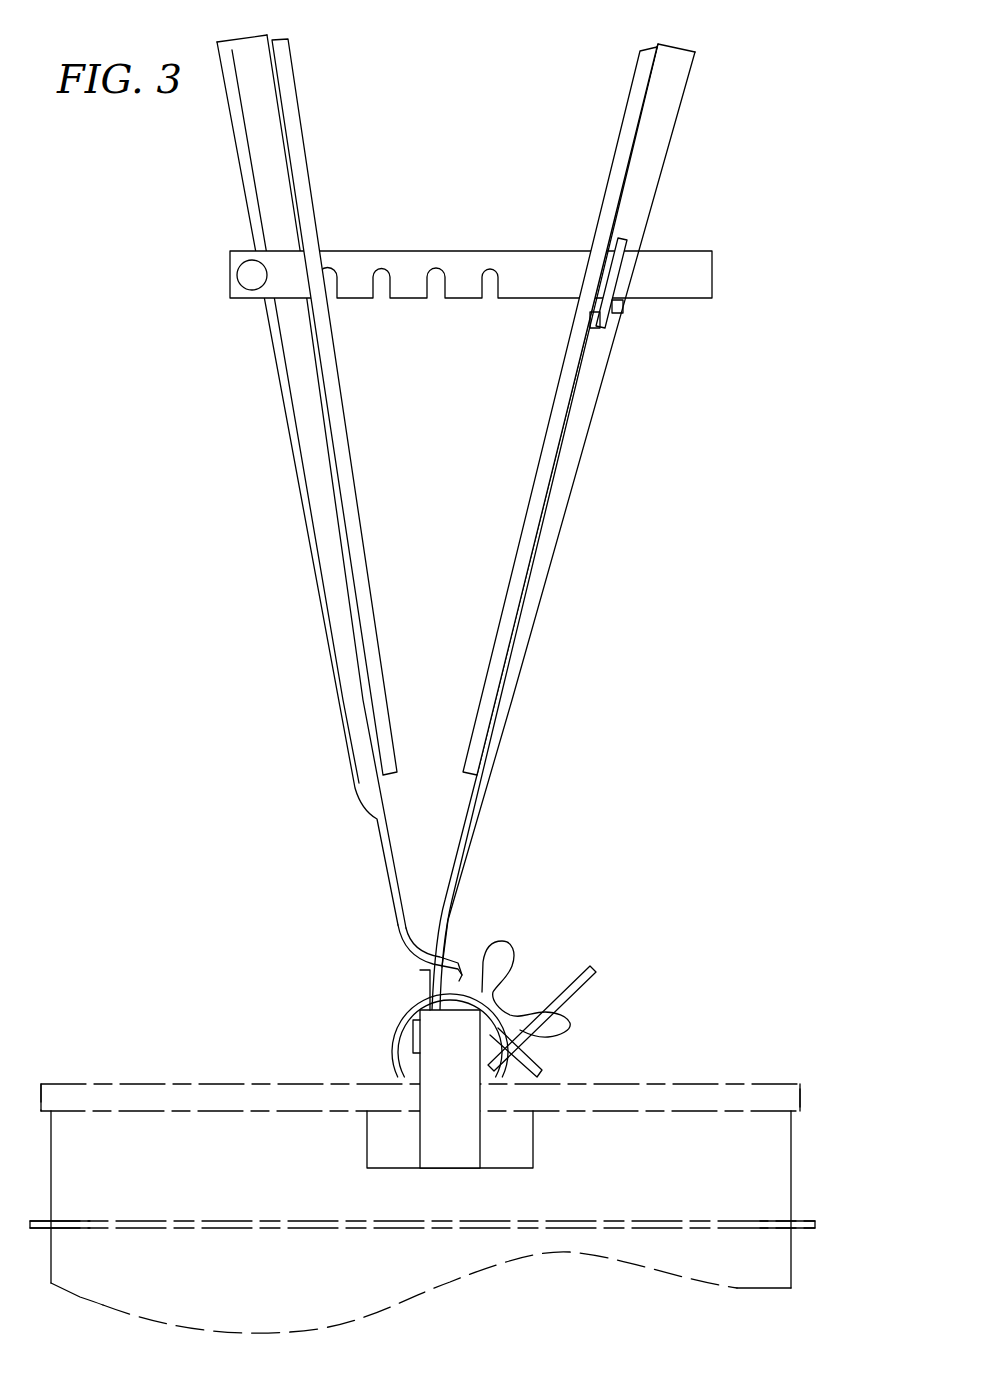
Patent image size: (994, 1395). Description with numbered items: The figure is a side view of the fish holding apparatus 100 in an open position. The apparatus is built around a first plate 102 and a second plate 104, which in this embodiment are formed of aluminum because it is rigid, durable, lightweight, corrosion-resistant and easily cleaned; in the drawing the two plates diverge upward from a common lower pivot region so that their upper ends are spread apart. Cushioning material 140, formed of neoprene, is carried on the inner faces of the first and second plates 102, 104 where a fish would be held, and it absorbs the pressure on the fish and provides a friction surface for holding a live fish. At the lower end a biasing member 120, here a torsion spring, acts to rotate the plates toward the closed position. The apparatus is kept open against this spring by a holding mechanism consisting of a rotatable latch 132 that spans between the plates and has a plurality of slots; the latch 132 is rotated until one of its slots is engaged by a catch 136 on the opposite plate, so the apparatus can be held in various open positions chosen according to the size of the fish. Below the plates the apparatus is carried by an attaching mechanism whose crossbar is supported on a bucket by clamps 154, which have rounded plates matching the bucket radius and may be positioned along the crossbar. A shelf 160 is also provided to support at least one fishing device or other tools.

The fish holding apparatus 100 is at (740, 62).
The first plate 102 is at (578, 477).
The second plate 104 is at (292, 459).
The biasing member 120 is at (410, 1012).
The latch 132 is at (713, 273).
The catch 136 is at (620, 310).
The cushioning material 140 is at (293, 59).
The clamps 154 is at (390, 1127).
The shelf 160 is at (596, 968).